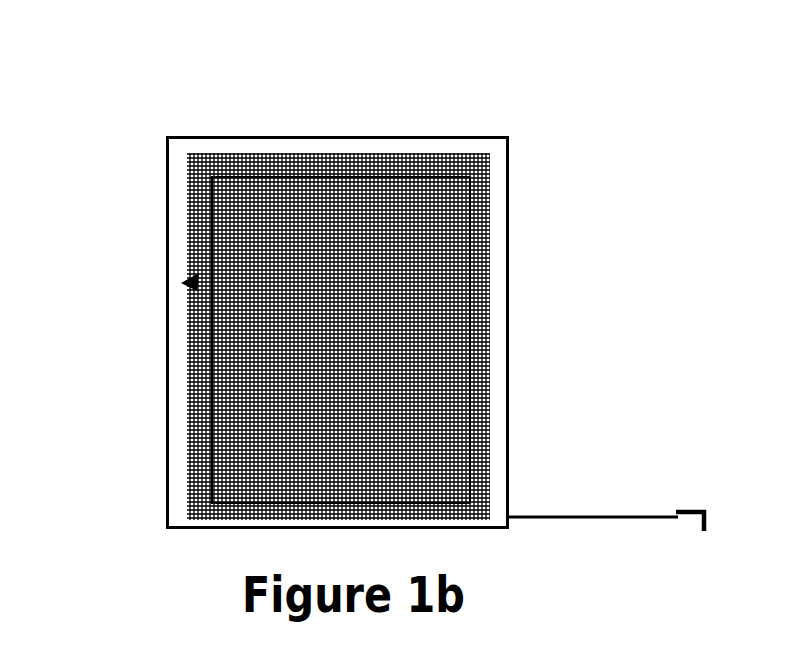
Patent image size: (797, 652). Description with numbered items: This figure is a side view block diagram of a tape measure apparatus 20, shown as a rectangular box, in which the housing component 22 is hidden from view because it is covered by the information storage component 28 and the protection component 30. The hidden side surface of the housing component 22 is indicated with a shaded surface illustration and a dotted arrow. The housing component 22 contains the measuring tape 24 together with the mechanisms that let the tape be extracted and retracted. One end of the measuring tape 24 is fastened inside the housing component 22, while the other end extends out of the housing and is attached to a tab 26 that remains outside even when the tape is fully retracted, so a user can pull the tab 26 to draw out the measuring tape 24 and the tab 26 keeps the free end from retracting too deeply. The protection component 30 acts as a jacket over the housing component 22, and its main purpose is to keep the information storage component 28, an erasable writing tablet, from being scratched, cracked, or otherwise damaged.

The tape measure apparatus 20 is at (140, 112).
The housing component 22 is at (138, 235).
The measuring tape 24 is at (636, 502).
The tab 26 is at (700, 497).
The information storage component 28 is at (430, 292).
The protection component 30 is at (420, 134).